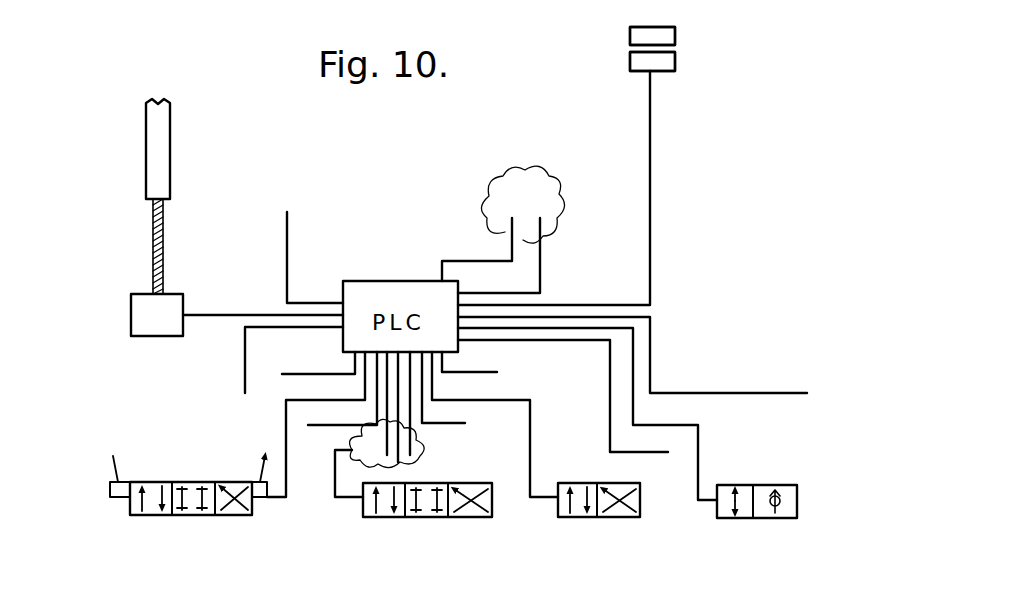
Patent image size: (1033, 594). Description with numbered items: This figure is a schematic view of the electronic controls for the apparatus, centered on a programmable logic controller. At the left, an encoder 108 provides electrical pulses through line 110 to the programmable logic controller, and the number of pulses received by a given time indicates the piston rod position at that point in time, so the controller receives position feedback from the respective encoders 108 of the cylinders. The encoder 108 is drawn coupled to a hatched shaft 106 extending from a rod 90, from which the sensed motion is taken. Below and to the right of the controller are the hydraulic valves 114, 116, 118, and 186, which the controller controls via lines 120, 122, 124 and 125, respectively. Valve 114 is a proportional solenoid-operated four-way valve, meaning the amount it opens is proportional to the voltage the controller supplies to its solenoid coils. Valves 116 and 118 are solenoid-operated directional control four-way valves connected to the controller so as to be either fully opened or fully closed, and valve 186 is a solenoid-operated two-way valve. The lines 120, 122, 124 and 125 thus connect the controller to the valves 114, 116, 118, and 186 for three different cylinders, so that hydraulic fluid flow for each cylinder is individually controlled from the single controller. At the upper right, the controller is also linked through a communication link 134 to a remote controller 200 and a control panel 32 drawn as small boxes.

The rod 90 is at (157, 137).
The threaded shaft 106 is at (155, 232).
The encoder 108 is at (131, 310).
The line 110 is at (287, 228).
The communication link 134 is at (733, 102).
The remote controller 200 is at (676, 35).
The control panel 32 is at (676, 62).
The line 125 is at (699, 443).
The line 120 is at (285, 415).
The line 122 is at (400, 424).
The line 124 is at (465, 423).
The proportional solenoid-operated four-way valve 114 is at (188, 516).
The solenoid-operated directional control four-way valve 116 is at (425, 518).
The solenoid-operated directional control four-way valve 118 is at (566, 519).
The solenoid-operated two-way valve 186 is at (762, 519).